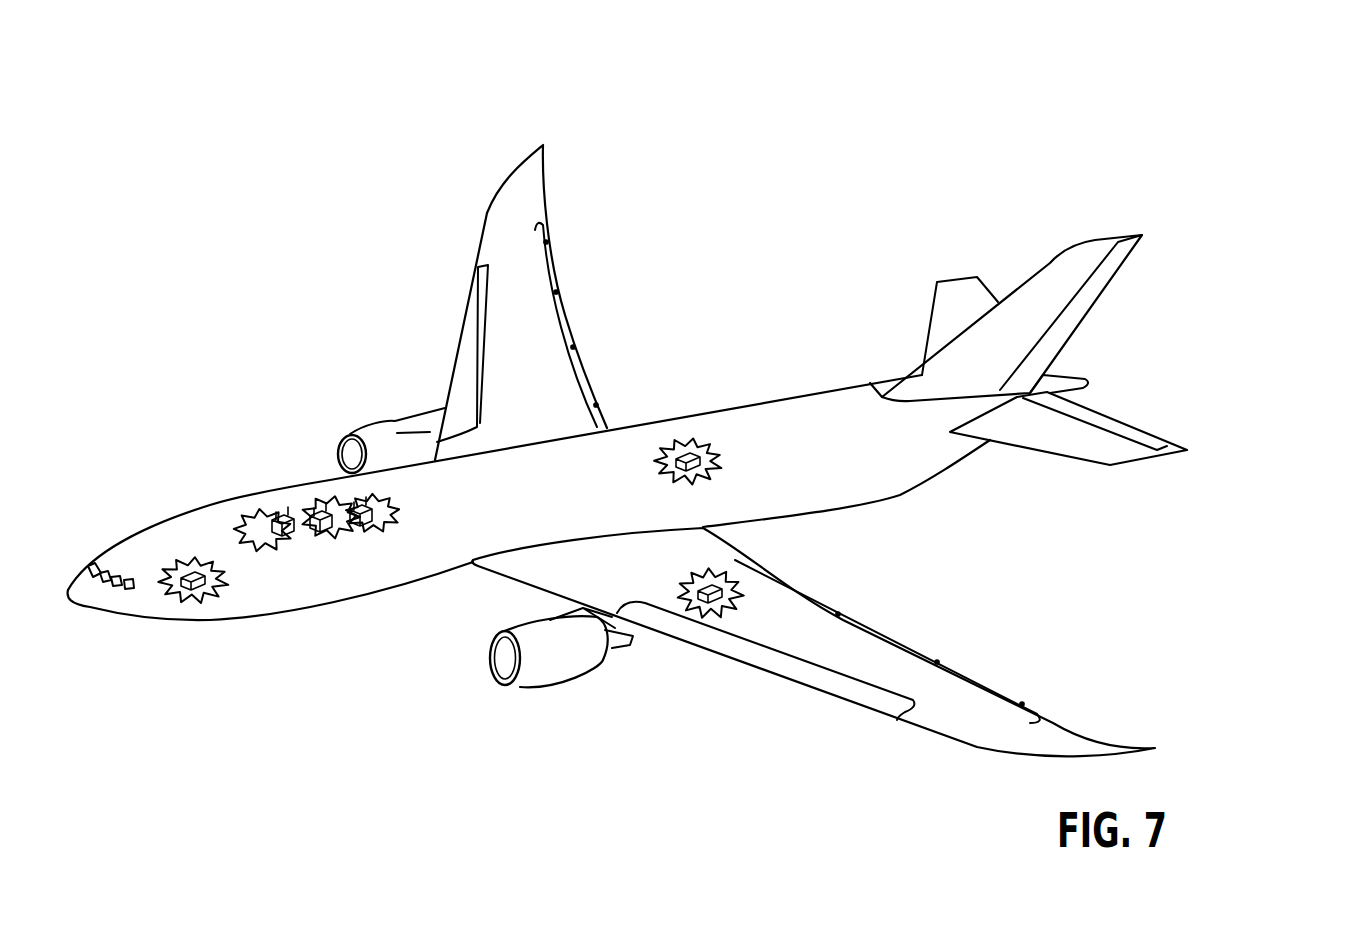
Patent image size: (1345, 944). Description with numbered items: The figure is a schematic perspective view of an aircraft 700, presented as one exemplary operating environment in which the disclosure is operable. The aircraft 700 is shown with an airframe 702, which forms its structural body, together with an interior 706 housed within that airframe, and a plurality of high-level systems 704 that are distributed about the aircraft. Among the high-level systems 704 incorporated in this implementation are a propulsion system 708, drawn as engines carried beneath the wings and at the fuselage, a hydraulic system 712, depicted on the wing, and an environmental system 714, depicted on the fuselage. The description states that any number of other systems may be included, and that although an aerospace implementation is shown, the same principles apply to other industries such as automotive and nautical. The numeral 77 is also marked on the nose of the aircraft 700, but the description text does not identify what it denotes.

The aircraft 700 is at (702, 404).
The airframe 702 is at (298, 462).
The high-level systems 704 is at (792, 368).
The interior 706 is at (270, 488).
The propulsion system 708 is at (373, 433).
The hydraulic system 712 is at (719, 580).
The environmental system 714 is at (692, 452).
The nose sensor 77 is at (193, 557).